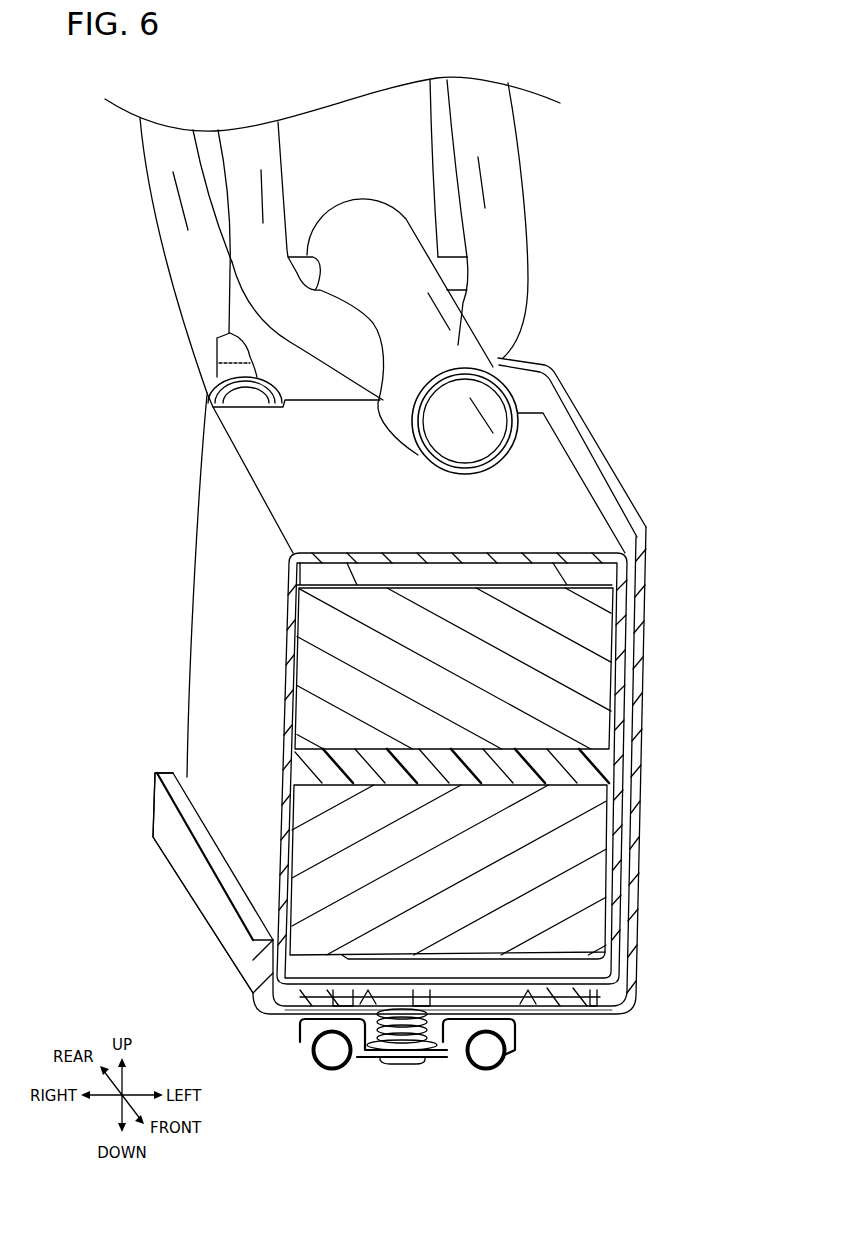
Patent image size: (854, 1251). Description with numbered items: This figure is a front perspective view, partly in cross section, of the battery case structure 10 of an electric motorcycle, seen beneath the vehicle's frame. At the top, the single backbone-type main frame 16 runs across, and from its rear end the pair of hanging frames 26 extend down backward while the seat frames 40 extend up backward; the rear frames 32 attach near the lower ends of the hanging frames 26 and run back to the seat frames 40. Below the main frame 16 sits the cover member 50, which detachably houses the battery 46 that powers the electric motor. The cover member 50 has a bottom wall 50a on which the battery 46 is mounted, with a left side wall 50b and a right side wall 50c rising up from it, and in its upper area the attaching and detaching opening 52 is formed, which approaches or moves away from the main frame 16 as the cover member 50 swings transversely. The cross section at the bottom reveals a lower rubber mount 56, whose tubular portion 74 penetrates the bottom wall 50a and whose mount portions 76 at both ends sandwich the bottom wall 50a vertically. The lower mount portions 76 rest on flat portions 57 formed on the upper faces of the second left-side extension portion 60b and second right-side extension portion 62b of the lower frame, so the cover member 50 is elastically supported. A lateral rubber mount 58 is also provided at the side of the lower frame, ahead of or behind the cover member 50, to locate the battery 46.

The battery case structure 10 is at (627, 88).
The main frame 16 is at (410, 415).
The hanging frames 26 is at (243, 315).
The rear frames 32 is at (437, 148).
The seat frames 40 is at (267, 147).
The battery 46 is at (213, 487).
The cover member 50 is at (655, 590).
The bottom wall 50a is at (598, 1015).
The left side wall 50b is at (637, 780).
The right side wall 50c is at (193, 863).
The attaching and detaching opening 52 is at (572, 433).
The lower rubber mount 56 is at (376, 972).
The flat portions 57 is at (440, 1050).
The lateral rubber mount 58 is at (192, 395).
The second left-side extension portion 60b is at (487, 1072).
The second right-side extension portion 62b is at (335, 1072).
The tubular portion 74 is at (503, 1017).
The mount portions 76 is at (512, 1015).